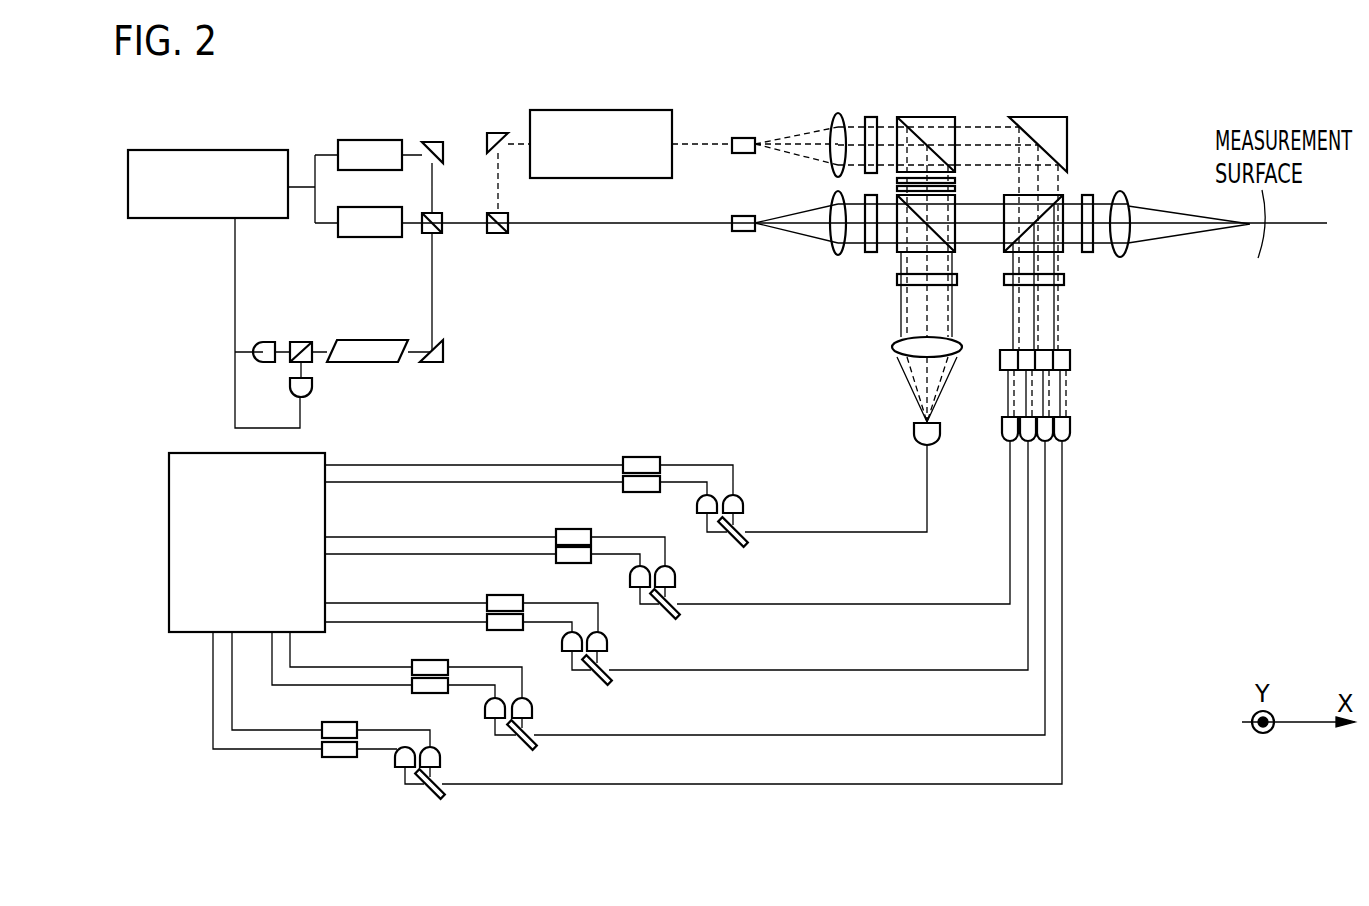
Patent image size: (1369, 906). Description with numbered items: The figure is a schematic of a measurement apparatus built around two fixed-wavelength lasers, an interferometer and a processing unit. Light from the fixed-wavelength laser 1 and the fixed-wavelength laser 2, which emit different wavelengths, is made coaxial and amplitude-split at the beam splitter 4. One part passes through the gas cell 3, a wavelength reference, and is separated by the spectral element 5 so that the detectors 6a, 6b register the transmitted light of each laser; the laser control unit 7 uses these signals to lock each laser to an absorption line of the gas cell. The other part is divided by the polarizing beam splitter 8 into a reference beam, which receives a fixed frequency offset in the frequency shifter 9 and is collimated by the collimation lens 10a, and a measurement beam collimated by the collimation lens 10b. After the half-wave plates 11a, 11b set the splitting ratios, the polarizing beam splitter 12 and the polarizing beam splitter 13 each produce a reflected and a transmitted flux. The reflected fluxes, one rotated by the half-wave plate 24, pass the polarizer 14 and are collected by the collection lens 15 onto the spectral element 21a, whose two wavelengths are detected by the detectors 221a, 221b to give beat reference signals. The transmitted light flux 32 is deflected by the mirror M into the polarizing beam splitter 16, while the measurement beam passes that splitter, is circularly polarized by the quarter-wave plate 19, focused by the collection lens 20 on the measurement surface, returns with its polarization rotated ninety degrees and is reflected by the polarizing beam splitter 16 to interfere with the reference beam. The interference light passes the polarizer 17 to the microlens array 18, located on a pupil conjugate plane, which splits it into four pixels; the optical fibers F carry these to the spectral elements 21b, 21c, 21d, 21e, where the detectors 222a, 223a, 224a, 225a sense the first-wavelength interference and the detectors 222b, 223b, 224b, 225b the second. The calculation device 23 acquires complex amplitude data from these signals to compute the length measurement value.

The fixed-wavelength laser 1 is at (370, 140).
The fixed-wavelength laser 2 is at (370, 238).
The gas cell 3 is at (372, 340).
The beam splitter 4 is at (438, 213).
The spectral element 5 is at (303, 342).
The detector 6a is at (267, 342).
The detector 6b is at (313, 388).
The laser control unit 7 is at (228, 150).
The polarizing beam splitter 8 is at (502, 234).
The frequency shifter 9 is at (600, 110).
The collimation lens 10a is at (836, 113).
The collimation lens 10b is at (834, 197).
The half-wave plate 11a is at (868, 117).
The half-wave plate 11b is at (865, 250).
The polarizing beam splitter 12 is at (930, 117).
The polarizing beam splitter 13 is at (915, 240).
The polarizer 14 is at (957, 278).
The collection lens 15 is at (893, 345).
The polarizing beam splitter 16 is at (1062, 198).
The polarizer 17 is at (1005, 285).
The microlens array 18 is at (1072, 360).
The quarter-wave plate 19 is at (1086, 254).
The collection lens 20 is at (1122, 192).
The spectral element 21a is at (752, 522).
The spectral element 21b is at (677, 602).
The spectral element 21c is at (609, 668).
The spectral element 21d is at (534, 733).
The spectral element 21e is at (442, 782).
The calculation device 23 is at (181, 453).
The half-wave plate 24 is at (957, 182).
The transmitted light flux 32 is at (983, 122).
The mirror M is at (1051, 123).
The optical fibers F is at (1067, 468).
The detector 221a is at (643, 457).
The detector 221b is at (640, 493).
The detector 222a is at (570, 529).
The detector 222b is at (577, 563).
The detector 223a is at (505, 595).
The detector 223b is at (510, 630).
The detector 224a is at (428, 660).
The detector 224b is at (433, 693).
The detector 225a is at (337, 722).
The detector 225b is at (342, 757).